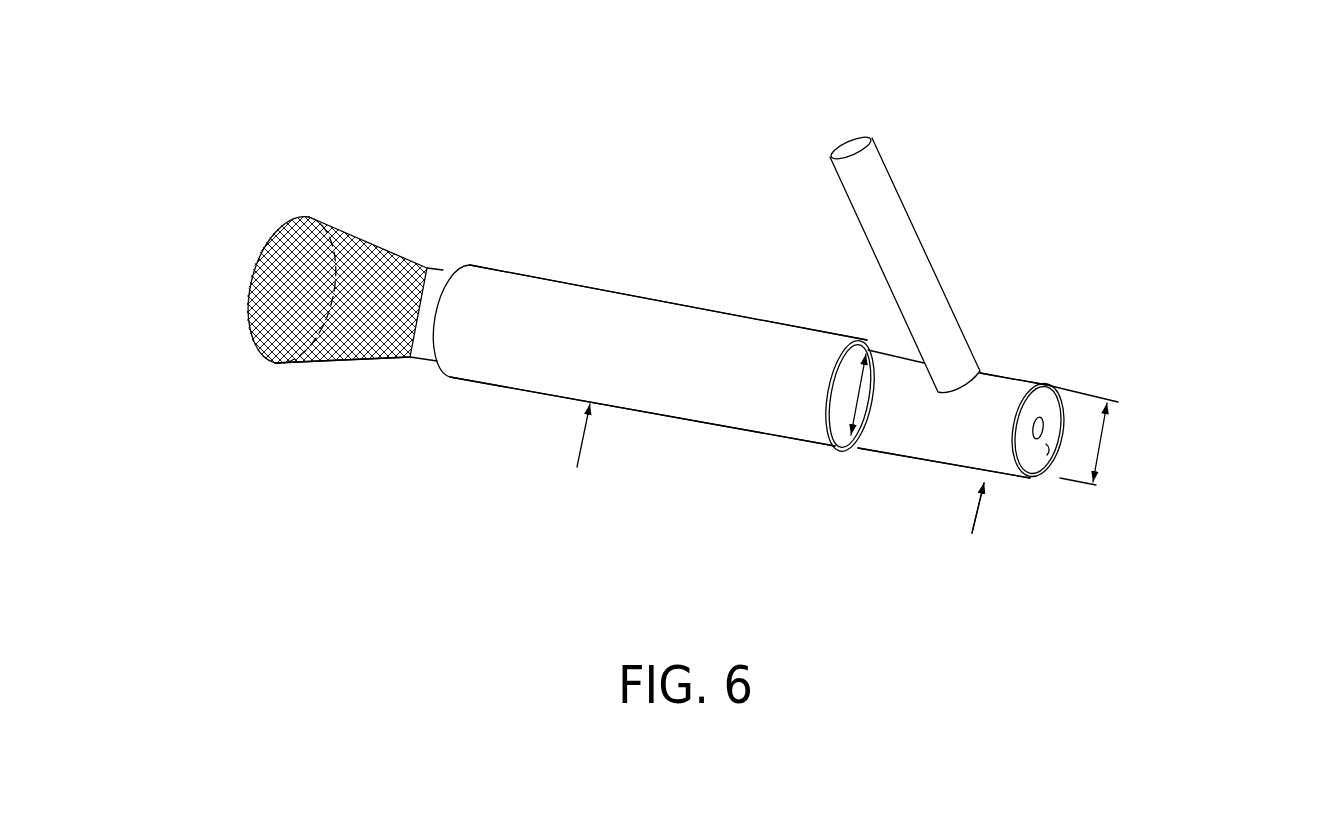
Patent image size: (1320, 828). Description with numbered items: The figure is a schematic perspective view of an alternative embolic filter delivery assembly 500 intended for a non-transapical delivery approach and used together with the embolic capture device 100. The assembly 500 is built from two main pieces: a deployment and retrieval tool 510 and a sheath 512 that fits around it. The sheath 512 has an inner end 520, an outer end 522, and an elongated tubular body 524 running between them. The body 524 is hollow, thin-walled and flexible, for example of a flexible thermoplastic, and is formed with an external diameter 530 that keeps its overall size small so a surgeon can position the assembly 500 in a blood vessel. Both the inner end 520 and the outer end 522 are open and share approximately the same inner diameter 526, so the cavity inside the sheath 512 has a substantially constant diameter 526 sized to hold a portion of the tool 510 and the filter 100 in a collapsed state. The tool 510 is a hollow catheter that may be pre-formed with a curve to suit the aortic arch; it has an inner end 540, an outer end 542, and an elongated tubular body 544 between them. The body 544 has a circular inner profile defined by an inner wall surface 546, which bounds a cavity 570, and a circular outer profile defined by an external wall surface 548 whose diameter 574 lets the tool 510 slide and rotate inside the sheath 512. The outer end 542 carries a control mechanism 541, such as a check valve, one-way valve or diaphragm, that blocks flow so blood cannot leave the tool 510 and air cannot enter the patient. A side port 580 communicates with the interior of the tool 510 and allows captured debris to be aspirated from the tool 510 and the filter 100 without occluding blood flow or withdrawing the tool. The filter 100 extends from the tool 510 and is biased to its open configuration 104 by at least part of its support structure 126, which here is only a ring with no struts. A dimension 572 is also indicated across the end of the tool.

The embolic filter delivery assembly 500 is at (548, 138).
The embolic capture device 100 is at (333, 228).
The support structure 126 is at (293, 263).
The open configuration 104 is at (295, 378).
The inner end 540 is at (410, 353).
The inner end 520 is at (470, 265).
The external diameter 530 is at (614, 281).
The elongated tubular body 524 is at (669, 343).
The sheath 512 is at (683, 422).
The outer end 522 is at (835, 366).
The inner diameter 526 is at (890, 443).
The deployment and retrieval tool 510 is at (1013, 390).
The elongated tubular body 544 is at (948, 443).
The external wall surface 548 is at (988, 415).
The diameter 574 is at (1007, 353).
The side port 580 is at (893, 182).
The outer end 542 is at (1053, 386).
The control mechanism 541 is at (1052, 398).
The cavity 570 is at (1024, 444).
The inner wall surface 546 is at (1056, 470).
The end diameter dimension 572 is at (1102, 441).